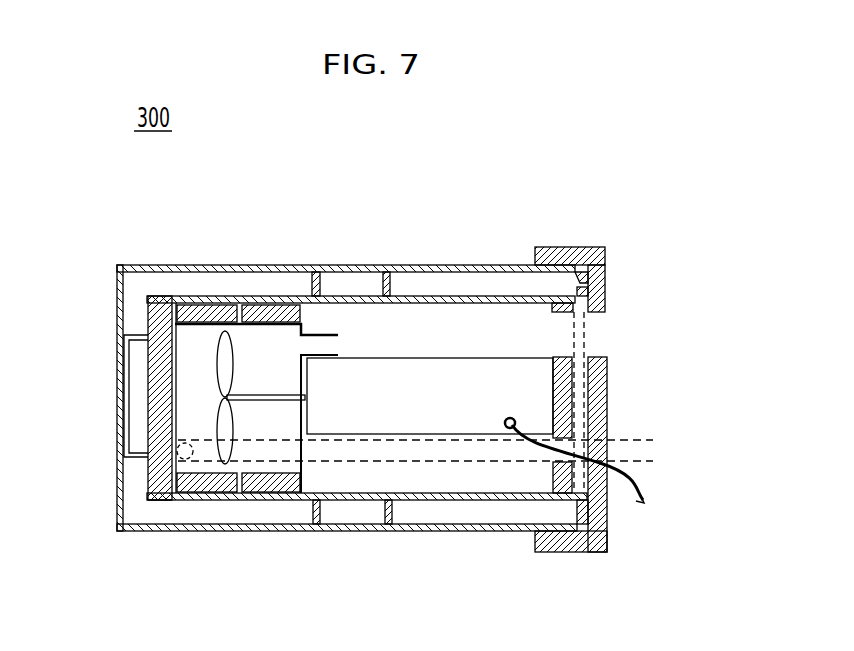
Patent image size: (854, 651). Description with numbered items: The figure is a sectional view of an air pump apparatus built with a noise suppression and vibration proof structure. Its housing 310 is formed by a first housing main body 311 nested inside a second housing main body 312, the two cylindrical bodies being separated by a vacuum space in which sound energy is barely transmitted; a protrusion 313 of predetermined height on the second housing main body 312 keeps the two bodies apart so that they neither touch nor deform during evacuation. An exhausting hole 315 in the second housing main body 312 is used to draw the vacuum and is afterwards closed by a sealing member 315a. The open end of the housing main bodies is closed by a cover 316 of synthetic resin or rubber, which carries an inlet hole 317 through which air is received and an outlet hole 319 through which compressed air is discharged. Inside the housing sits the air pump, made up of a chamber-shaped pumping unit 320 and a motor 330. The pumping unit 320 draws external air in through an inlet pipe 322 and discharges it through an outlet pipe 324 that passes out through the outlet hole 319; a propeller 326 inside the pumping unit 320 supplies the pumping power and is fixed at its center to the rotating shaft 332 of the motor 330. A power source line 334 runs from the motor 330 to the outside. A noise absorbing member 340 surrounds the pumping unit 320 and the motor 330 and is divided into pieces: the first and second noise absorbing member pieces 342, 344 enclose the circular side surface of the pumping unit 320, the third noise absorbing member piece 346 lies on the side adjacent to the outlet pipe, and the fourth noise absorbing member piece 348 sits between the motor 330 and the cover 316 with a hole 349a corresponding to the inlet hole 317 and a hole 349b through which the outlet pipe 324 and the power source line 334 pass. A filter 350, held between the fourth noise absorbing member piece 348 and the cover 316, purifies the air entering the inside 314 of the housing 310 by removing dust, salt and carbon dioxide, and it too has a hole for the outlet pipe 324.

The housing 310 is at (202, 258).
The first housing main body 311 is at (270, 296).
The second housing main body 312 is at (413, 265).
The protrusion 313 is at (378, 284).
The inside of the housing 314 is at (427, 477).
The exhausting hole 315 is at (592, 248).
The sealing member 315a is at (582, 276).
The cover 316 is at (600, 530).
The inlet hole 317 is at (590, 324).
The outlet hole 319 is at (607, 425).
The pumping unit 320 is at (172, 396).
The inlet pipe 322 is at (317, 333).
The outlet pipe 324 is at (633, 452).
The propeller 326 is at (222, 357).
The motor 330 is at (455, 342).
The rotating shaft 332 is at (318, 502).
The power source line 334 is at (637, 485).
The noise absorbing member 340 is at (136, 470).
The first noise absorbing member piece 342 is at (270, 493).
The second noise absorbing member piece 344 is at (207, 493).
The third noise absorbing member piece 346 is at (157, 498).
The fourth noise absorbing member piece 348 is at (565, 395).
The hole 349a is at (585, 294).
The hole 349b is at (547, 460).
The filter 350 is at (580, 350).